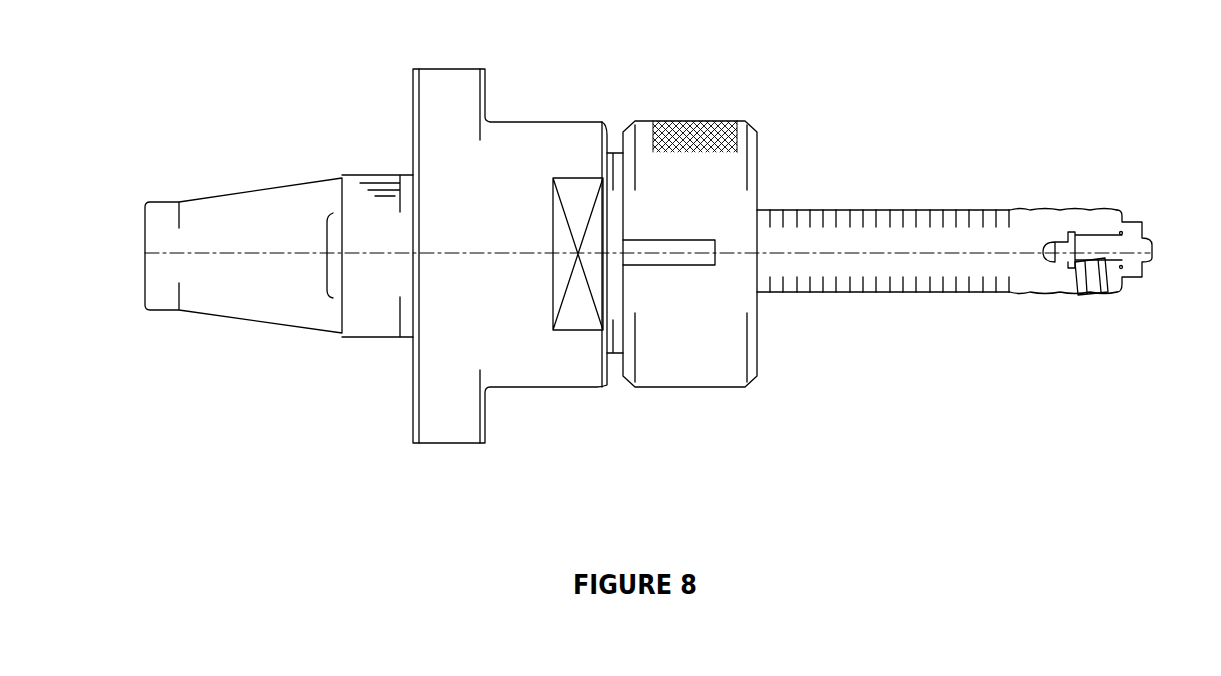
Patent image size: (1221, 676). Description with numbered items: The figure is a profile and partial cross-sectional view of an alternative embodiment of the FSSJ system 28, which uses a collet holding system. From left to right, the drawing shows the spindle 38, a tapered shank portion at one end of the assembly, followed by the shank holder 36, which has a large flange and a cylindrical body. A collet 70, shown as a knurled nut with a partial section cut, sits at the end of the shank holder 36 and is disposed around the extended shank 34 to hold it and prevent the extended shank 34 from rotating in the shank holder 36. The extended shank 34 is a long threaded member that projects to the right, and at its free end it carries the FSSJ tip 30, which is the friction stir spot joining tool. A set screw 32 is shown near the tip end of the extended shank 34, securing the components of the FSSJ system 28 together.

The FSSJ system 28 is at (790, 458).
The FSSJ tip 30 is at (1133, 226).
The set screw 32 is at (1122, 310).
The extended shank 34 is at (1110, 330).
The shank holder 36 is at (607, 447).
The spindle 38 is at (350, 145).
The collet 70 is at (728, 122).